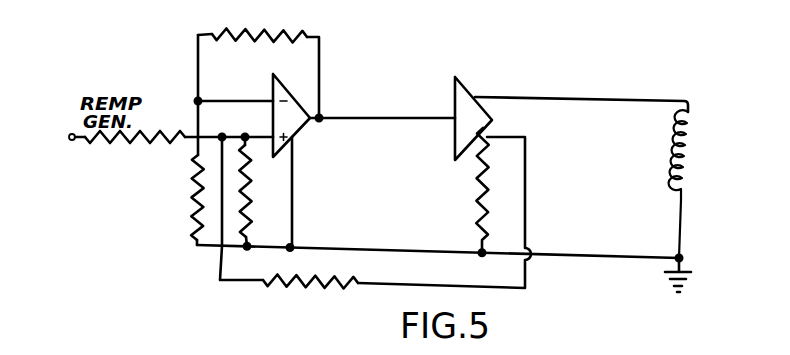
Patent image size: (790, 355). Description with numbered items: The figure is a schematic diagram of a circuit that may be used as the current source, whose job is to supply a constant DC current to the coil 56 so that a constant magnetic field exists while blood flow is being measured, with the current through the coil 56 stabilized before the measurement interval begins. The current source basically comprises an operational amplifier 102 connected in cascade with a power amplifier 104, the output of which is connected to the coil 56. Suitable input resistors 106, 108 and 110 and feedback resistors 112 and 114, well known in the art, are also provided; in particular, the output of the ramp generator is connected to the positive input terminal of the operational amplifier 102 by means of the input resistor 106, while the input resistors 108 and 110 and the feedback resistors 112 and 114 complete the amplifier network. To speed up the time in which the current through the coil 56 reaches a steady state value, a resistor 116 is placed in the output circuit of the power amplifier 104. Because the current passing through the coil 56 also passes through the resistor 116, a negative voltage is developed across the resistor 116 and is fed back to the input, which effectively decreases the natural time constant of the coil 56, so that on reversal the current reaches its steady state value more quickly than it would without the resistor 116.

The coil 56 is at (690, 148).
The operational amplifier 102 is at (303, 126).
The power amplifier 104 is at (478, 92).
The input resistor 106 is at (148, 144).
The input resistor 108 is at (195, 204).
The input resistor 110 is at (249, 190).
The feedback resistor 112 is at (210, 33).
The feedback resistor 114 is at (300, 285).
The resistor 116 is at (478, 196).